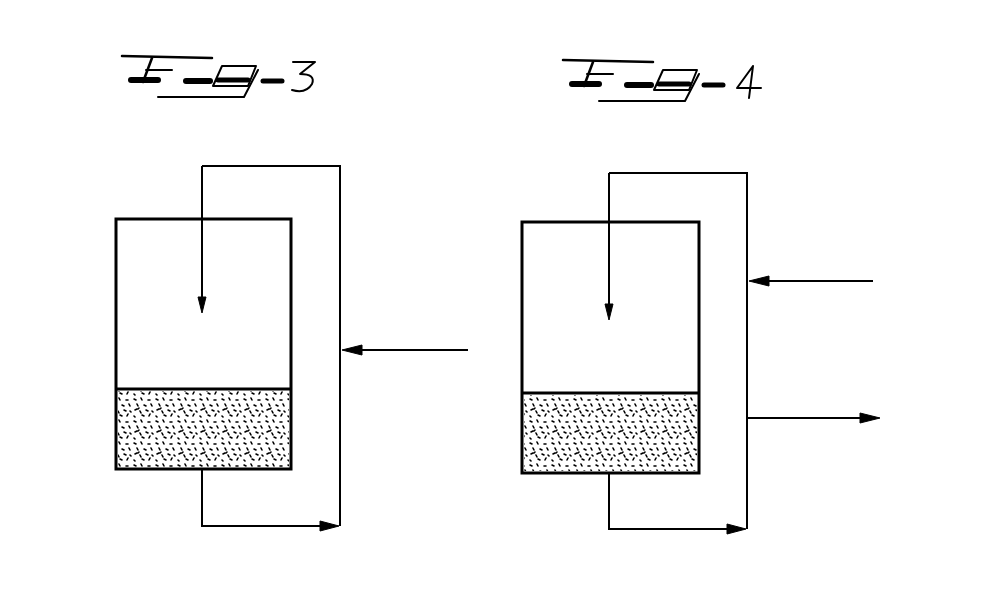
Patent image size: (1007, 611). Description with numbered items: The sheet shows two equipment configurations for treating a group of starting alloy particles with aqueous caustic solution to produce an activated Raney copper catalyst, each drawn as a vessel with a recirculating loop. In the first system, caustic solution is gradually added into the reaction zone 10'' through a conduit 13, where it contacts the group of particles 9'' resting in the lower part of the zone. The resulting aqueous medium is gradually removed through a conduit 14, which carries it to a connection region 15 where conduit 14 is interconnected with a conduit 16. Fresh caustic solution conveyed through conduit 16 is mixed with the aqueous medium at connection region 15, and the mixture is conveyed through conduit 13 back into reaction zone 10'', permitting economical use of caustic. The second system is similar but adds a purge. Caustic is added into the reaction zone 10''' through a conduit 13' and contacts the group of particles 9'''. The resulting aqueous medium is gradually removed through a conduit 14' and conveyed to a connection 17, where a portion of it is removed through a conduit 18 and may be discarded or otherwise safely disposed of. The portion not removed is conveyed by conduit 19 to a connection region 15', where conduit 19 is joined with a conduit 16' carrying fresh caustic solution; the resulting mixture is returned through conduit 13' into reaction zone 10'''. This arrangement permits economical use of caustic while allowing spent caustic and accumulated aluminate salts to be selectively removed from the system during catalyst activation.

In FIG. 3, the reaction zone 10'' is at (172, 344).
In FIG. 3, the group of particles 9'' is at (180, 428).
In FIG. 3, the conduit 13 is at (229, 239).
In FIG. 3, the connection region 15 is at (271, 346).
In FIG. 3, the conduit 16 is at (405, 326).
In FIG. 3, the conduit 14 is at (270, 519).
In FIG. 4, the reaction zone 10''' is at (576, 347).
In FIG. 4, the group of particles 9''' is at (580, 432).
In FIG. 4, the conduit 13' is at (639, 246).
In FIG. 4, the connection region 15' is at (678, 251).
In FIG. 4, the conduit 16' is at (811, 262).
In FIG. 4, the conduit 19 is at (750, 350).
In FIG. 4, the connection 17 is at (743, 420).
In FIG. 4, the conduit 18 is at (825, 420).
In FIG. 4, the conduit 14' is at (677, 525).